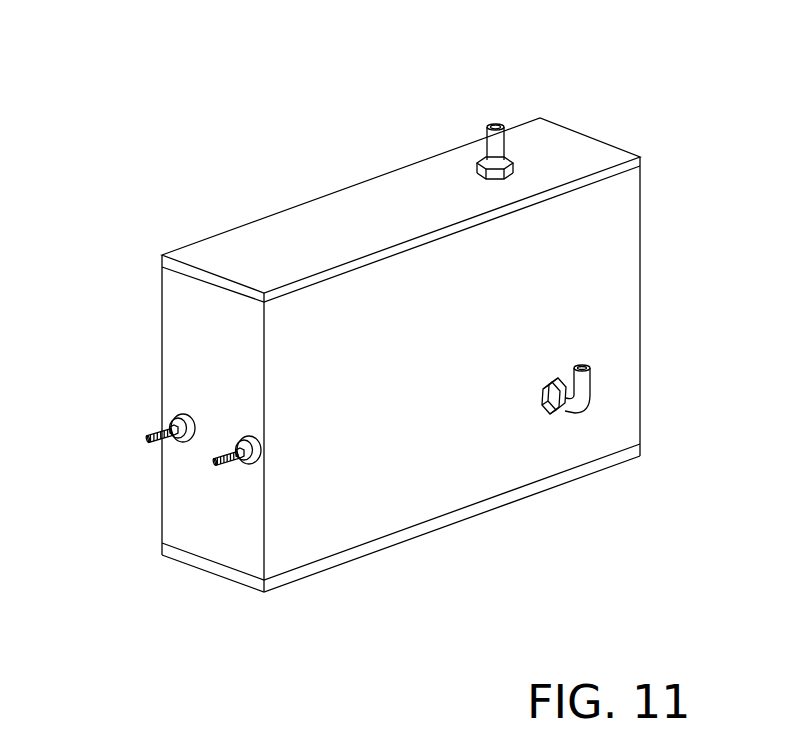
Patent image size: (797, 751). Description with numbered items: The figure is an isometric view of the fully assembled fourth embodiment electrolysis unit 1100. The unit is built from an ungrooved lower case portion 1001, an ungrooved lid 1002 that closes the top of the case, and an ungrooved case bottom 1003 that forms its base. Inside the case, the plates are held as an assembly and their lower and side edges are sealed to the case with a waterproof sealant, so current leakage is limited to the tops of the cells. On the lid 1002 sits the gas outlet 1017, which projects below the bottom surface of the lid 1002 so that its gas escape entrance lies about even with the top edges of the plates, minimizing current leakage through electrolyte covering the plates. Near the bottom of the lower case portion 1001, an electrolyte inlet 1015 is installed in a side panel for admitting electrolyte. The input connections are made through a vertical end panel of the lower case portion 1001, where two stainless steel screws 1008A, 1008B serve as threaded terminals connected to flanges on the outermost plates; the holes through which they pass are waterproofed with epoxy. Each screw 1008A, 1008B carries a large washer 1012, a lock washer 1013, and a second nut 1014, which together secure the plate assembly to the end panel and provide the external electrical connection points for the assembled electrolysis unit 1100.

The fully assembled fourth embodiment electrolysis unit 1100 is at (282, 62).
The lower case portion 1001 is at (587, 280).
The lid 1002 is at (348, 223).
The case bottom 1003 is at (480, 513).
The gas outlet 1017 is at (498, 147).
The electrolyte inlet 1015 is at (580, 407).
The stainless steel screw 1008A is at (215, 462).
The stainless steel screw 1008B is at (148, 438).
The large washer 1012 is at (250, 468).
The lock washer 1013 is at (247, 468).
The second nut 1014 is at (243, 468).